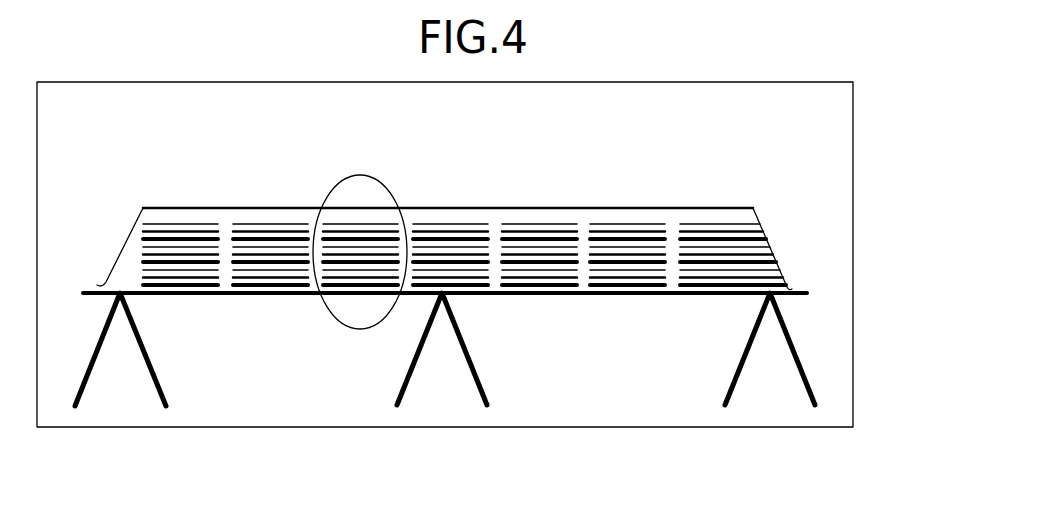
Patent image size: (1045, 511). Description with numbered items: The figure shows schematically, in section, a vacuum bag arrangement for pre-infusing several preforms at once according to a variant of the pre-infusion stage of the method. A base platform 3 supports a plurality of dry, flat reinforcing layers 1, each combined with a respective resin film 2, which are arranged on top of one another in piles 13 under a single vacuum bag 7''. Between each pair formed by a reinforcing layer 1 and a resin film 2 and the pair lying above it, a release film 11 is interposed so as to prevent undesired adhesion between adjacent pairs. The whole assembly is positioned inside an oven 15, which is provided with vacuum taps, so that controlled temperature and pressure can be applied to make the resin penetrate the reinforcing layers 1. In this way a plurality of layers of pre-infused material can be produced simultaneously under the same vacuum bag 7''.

The reinforcing layer 1 is at (770, 243).
The resin film 2 is at (765, 233).
The release film 11 is at (758, 229).
The base platform 3 is at (510, 302).
The vacuum bag 7'' is at (444, 217).
The pile 13 is at (398, 192).
The oven 15 is at (278, 430).